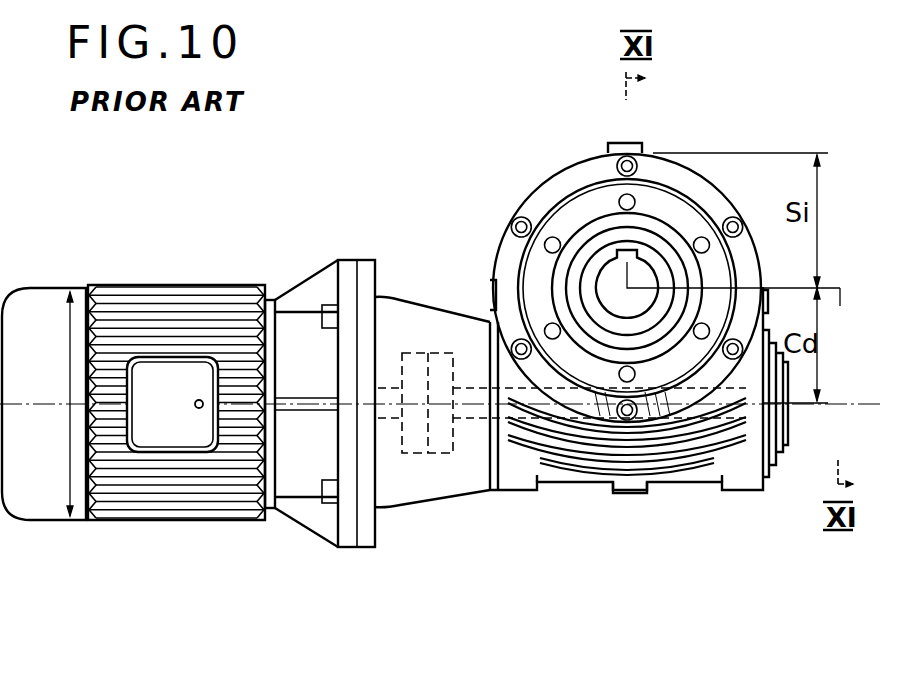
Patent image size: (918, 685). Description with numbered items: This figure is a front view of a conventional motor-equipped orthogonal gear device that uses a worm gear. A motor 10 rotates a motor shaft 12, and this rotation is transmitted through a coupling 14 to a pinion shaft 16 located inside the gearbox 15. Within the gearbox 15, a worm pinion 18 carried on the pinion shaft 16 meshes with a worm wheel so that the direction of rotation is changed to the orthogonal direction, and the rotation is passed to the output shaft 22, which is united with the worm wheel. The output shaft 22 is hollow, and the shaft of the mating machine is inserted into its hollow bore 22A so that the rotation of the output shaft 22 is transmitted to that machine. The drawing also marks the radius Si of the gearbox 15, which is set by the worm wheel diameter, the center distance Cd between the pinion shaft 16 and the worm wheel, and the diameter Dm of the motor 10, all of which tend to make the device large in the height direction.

The motor 10 is at (176, 495).
The motor shaft 12 is at (388, 420).
The coupling 14 is at (433, 455).
The gearbox 15 is at (685, 178).
The pinion shaft 16 is at (468, 420).
The worm pinion 18 is at (648, 423).
The output shaft 22 is at (605, 256).
The hollow bore 22A is at (598, 287).